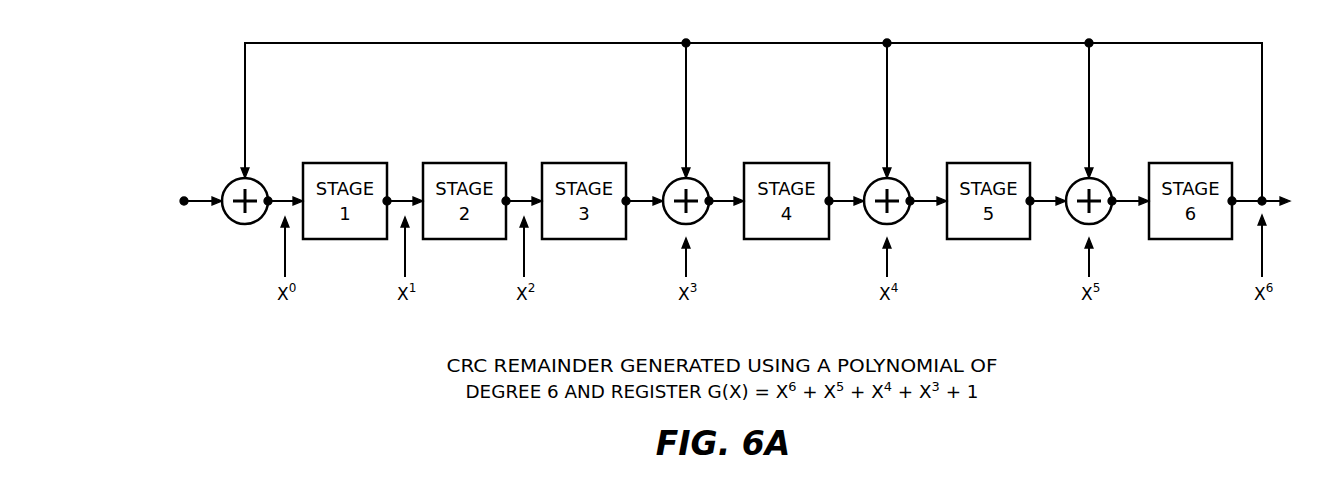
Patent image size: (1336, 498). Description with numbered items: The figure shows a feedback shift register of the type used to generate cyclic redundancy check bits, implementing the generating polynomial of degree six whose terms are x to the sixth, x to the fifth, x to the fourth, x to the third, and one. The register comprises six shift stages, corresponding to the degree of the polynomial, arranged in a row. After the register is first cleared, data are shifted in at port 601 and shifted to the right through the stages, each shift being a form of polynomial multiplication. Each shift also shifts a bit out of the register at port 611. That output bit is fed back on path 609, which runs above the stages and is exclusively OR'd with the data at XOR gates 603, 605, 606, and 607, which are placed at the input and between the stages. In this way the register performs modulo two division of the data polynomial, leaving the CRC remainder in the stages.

The port 601 is at (184, 205).
The XOR gate 603 is at (262, 181).
The XOR gate 605 is at (698, 180).
The XOR gate 606 is at (899, 180).
The XOR gate 607 is at (1101, 180).
The path 609 is at (245, 108).
The port 611 is at (1284, 194).